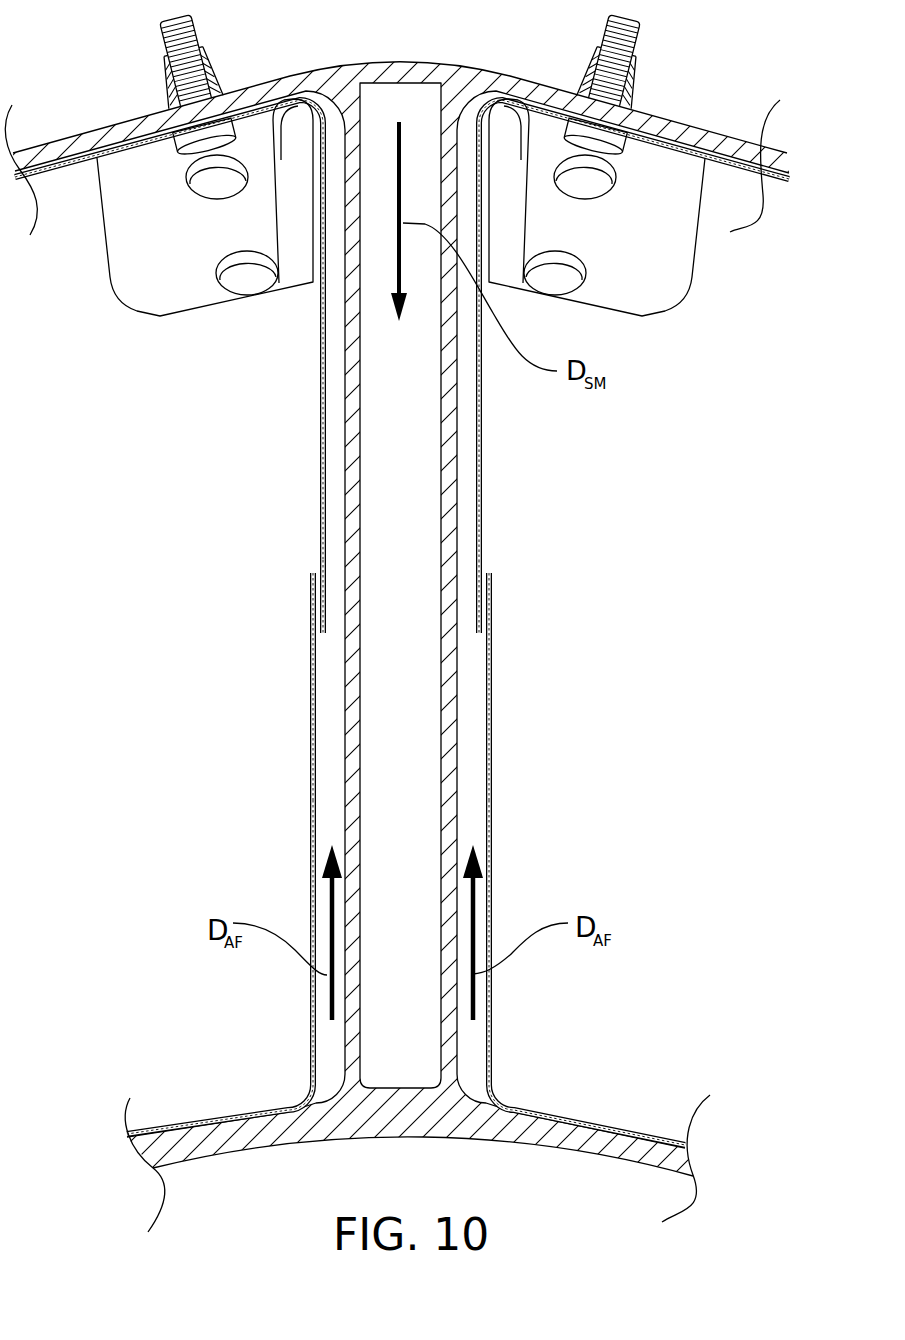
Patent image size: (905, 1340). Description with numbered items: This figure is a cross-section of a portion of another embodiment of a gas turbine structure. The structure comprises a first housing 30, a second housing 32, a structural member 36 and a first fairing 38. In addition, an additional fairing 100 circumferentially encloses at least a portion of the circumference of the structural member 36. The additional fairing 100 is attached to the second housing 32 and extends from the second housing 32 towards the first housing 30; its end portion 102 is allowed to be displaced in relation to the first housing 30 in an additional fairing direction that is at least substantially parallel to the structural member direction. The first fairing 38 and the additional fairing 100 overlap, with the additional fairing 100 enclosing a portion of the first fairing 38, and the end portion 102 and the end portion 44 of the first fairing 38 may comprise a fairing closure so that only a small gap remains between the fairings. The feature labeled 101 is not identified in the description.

The first housing 30 is at (696, 110).
The second housing 32 is at (610, 1152).
The structural member 36 is at (447, 389).
The first fairing 38 is at (482, 358).
The end portion of the first fairing 44 is at (472, 648).
The additional fairing 100 is at (494, 801).
The duct flange bend 101 is at (528, 1087).
The end portion of the additional fairing 102 is at (507, 560).